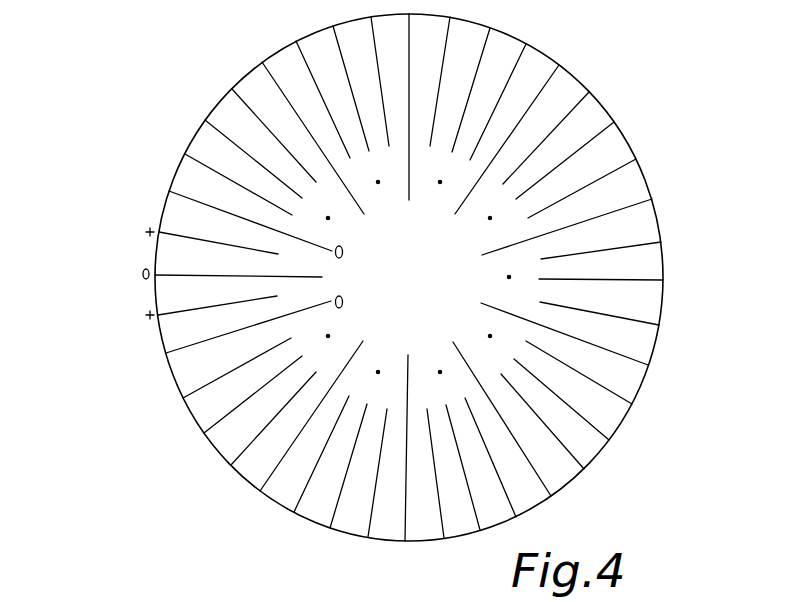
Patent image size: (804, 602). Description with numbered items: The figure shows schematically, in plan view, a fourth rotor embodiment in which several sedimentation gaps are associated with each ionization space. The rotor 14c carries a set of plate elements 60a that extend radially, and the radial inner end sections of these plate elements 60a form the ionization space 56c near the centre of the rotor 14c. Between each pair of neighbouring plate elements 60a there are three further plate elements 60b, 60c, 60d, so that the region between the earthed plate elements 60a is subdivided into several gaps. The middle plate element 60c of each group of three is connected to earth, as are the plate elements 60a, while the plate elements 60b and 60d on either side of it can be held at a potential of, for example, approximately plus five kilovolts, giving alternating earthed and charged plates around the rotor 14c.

The rotor 14c is at (628, 102).
The ionization space 56c is at (485, 238).
The plate elements 60a is at (181, 192).
The plate element 60b is at (172, 314).
The plate element 60c is at (175, 269).
The plate element 60d is at (172, 233).